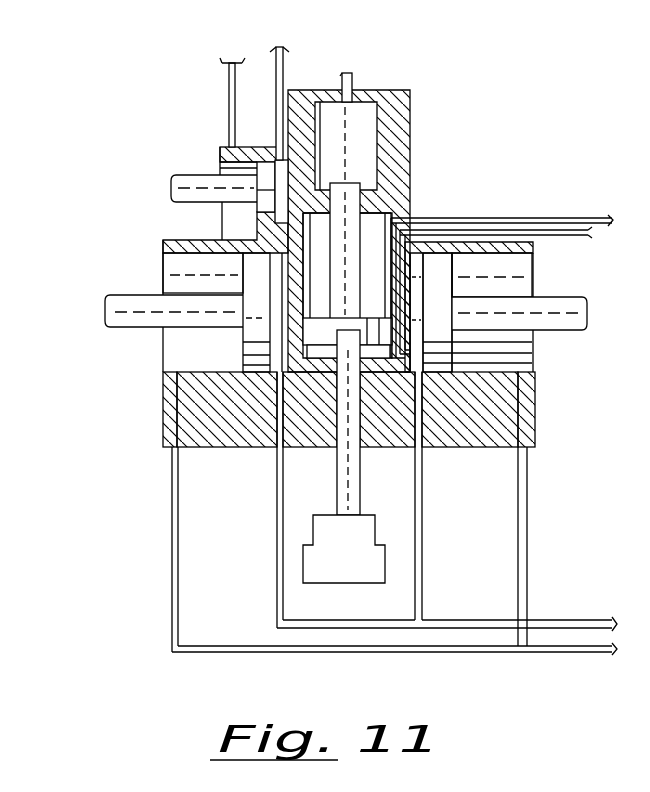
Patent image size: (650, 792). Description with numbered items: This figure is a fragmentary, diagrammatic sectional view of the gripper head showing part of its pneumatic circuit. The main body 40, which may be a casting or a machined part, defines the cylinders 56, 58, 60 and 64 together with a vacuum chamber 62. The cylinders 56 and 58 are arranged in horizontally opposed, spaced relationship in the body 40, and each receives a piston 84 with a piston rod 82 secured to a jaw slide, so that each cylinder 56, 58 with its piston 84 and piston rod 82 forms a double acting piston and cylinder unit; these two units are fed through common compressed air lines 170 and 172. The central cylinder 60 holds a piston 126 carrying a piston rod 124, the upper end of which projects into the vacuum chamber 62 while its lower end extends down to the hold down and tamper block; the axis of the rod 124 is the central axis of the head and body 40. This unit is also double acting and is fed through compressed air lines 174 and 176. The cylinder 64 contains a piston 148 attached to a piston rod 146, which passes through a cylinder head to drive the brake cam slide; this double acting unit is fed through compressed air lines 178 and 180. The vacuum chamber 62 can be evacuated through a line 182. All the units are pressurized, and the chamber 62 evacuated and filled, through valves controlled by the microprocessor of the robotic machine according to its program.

The main body 40 is at (403, 172).
The cylinder 56 is at (222, 363).
The cylinder 58 is at (503, 285).
The cylinder 60 is at (372, 235).
The vacuum chamber 62 is at (347, 187).
The cylinder 64 is at (240, 165).
The piston rod 82 is at (135, 320).
The piston 84 is at (252, 270).
The piston rod 124 is at (352, 460).
The piston 126 is at (323, 335).
The piston rod 146 is at (193, 183).
The piston 148 is at (263, 210).
The compressed air line 170 is at (563, 620).
The compressed air line 172 is at (574, 652).
The compressed air line 174 is at (552, 216).
The compressed air line 176 is at (573, 237).
The compressed air line 178 is at (228, 98).
The compressed air line 180 is at (284, 75).
The line 182 is at (352, 82).